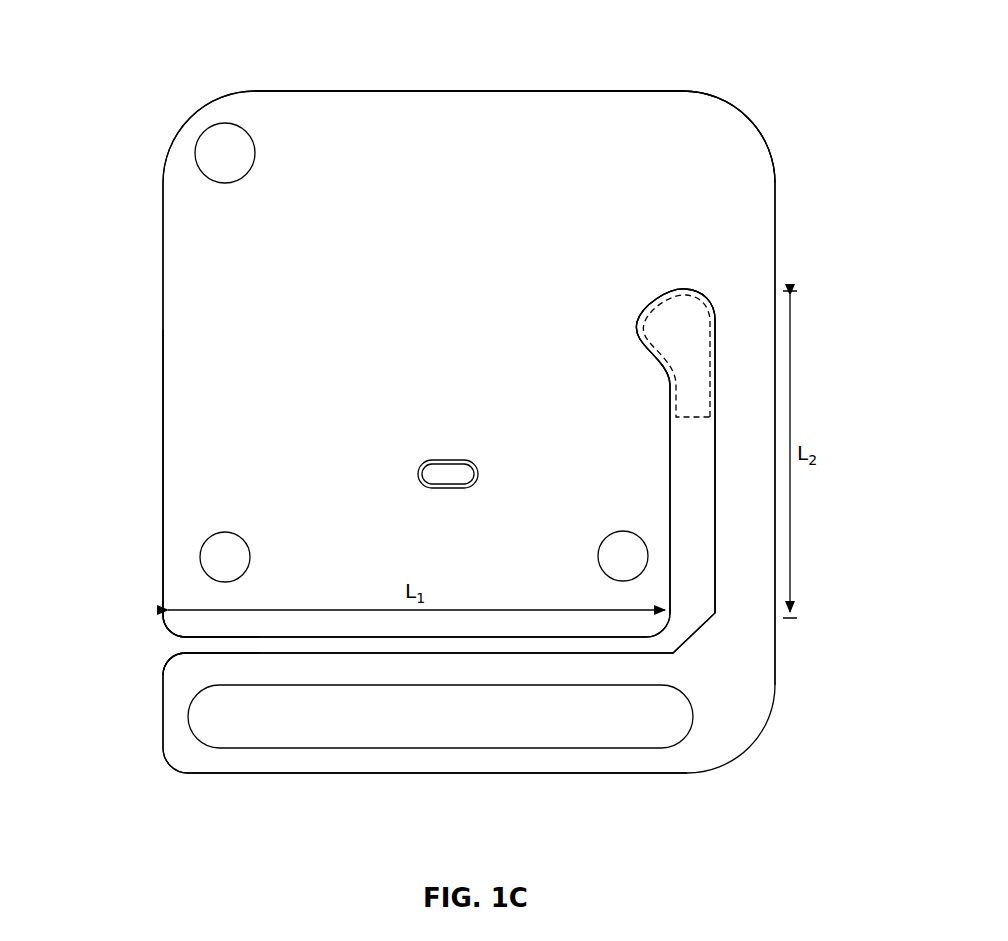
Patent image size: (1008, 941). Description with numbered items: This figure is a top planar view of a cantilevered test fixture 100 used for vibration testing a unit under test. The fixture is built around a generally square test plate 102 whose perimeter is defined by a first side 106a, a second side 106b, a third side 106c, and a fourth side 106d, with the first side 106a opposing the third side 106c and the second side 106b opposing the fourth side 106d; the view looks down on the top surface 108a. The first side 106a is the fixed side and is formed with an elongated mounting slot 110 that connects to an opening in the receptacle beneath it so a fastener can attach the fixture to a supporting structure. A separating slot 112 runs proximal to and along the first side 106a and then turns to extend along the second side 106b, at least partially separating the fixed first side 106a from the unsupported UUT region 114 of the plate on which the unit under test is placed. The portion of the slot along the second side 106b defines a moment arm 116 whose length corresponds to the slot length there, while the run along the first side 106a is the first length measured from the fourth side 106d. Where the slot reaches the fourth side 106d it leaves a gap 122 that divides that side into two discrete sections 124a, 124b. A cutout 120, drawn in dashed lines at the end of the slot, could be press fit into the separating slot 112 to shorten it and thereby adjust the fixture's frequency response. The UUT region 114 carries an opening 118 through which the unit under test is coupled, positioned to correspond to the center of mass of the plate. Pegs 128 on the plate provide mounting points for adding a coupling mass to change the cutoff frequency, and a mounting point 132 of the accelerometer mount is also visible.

The cantilevered test fixture 100 is at (138, 30).
The test plate 102 is at (476, 62).
The first side 106a is at (360, 775).
The second side 106b is at (778, 200).
The third side 106c is at (312, 90).
The fourth side 106d is at (125, 323).
The top surface 108a is at (640, 102).
The mounting slot 110 is at (250, 725).
The separating slot 112 is at (716, 453).
The UUT region 114 is at (480, 252).
The moment arm 116 is at (818, 398).
The opening 118 is at (448, 450).
The cutout 120 is at (708, 305).
The gap 122 is at (170, 645).
The discrete section 124a is at (162, 390).
The discrete section 124b is at (163, 715).
The pegs 128 is at (245, 132).
The mounting points 132 is at (232, 545).